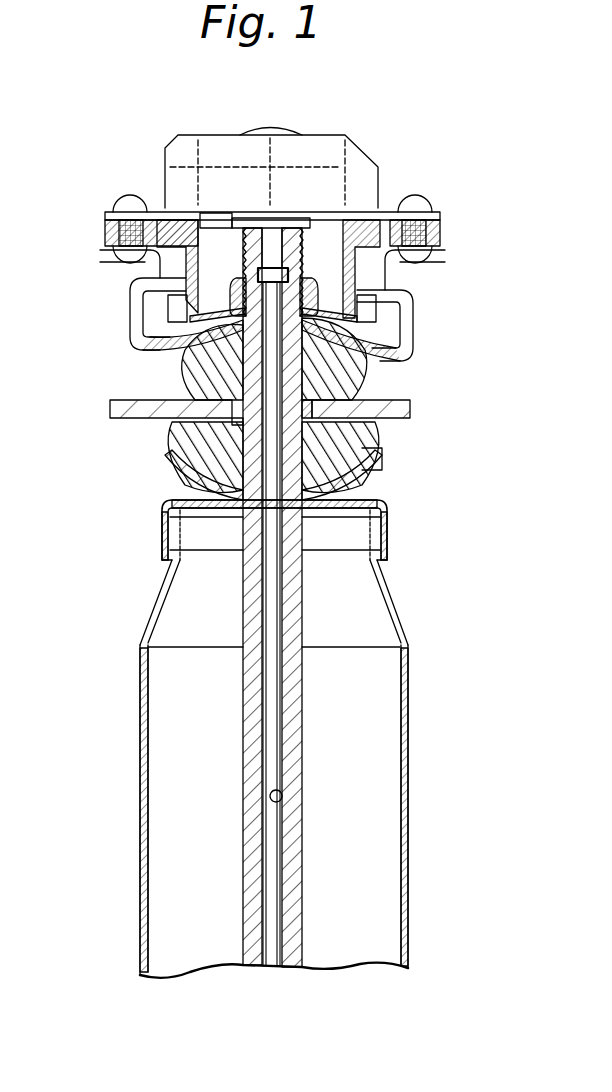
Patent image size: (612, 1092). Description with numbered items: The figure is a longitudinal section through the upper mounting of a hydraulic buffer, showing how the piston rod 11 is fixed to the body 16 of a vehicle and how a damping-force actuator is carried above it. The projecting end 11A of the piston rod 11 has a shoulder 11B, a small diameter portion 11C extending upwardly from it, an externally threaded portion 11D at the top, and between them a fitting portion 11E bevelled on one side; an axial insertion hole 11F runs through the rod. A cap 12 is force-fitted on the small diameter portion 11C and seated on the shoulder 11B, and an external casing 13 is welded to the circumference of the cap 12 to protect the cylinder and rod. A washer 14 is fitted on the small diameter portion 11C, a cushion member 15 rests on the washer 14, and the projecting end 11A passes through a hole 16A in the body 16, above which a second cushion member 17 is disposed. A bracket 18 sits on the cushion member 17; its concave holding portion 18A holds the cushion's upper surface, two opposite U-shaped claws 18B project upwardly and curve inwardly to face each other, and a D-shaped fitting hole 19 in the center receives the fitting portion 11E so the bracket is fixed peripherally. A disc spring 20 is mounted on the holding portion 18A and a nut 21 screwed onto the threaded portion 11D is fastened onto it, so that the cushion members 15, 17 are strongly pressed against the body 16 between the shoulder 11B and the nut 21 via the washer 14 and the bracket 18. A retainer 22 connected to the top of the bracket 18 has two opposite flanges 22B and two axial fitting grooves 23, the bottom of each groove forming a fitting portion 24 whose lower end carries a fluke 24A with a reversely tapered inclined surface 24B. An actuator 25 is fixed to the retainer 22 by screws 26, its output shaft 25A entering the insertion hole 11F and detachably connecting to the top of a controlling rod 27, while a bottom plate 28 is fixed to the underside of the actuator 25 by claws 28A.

The piston rod 11 is at (243, 843).
The projecting end 11A is at (300, 600).
The shoulder 11B is at (305, 518).
The small diameter portion 11C is at (378, 455).
The externally threaded portion 11D is at (320, 235).
The fitting portion 11E is at (160, 346).
The insertion hole 11F is at (282, 793).
The cap 12 is at (168, 538).
The external casing 13 is at (180, 592).
The washer 14 is at (190, 490).
The cushion member 15 is at (185, 467).
The body of a vehicle 16 is at (412, 410).
The hole 16A is at (190, 440).
The cushion member 17 is at (195, 376).
The bracket 18 is at (416, 331).
The holding portion 18A is at (370, 368).
The claws 18B is at (190, 292).
The fitting hole 19 is at (370, 392).
The disc spring 20 is at (405, 353).
The nut 21 is at (247, 275).
The retainer 22 is at (360, 237).
The flanges 22B is at (105, 228).
The fitting grooves 23 is at (177, 253).
The fitting portion 24 is at (152, 250).
The fluke 24A is at (135, 300).
The inclined surface 24B is at (190, 318).
The actuator 25 is at (330, 138).
The output shaft 25A is at (273, 240).
The screws 26 is at (122, 200).
The controlling rod 27 is at (270, 708).
The bottom plate 28 is at (430, 216).
The claws 28A is at (182, 213).